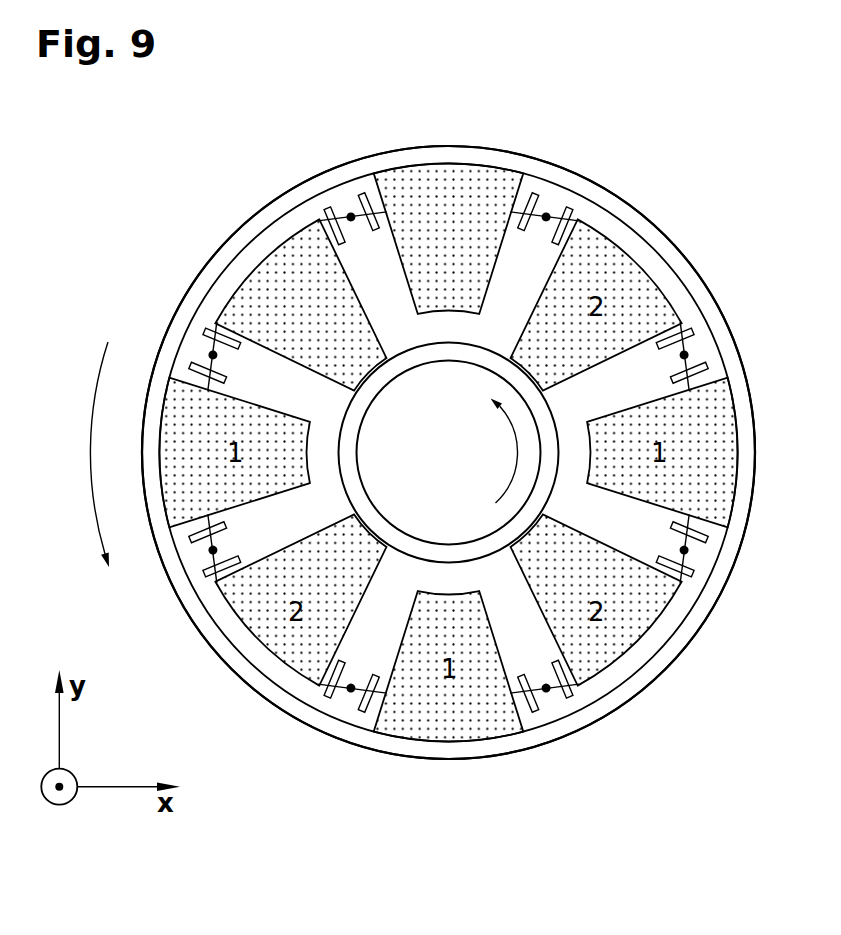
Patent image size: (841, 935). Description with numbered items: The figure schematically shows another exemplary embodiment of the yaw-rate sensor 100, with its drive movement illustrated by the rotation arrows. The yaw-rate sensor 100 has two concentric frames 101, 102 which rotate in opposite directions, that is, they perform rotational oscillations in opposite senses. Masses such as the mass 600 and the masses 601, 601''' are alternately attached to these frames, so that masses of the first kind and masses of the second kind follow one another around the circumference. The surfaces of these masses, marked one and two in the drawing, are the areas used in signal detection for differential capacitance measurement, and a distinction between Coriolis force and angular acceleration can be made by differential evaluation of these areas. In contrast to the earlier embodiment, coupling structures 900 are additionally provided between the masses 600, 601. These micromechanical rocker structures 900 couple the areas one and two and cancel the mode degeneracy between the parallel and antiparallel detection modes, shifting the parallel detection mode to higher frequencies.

The yaw-rate sensor 100 is at (698, 152).
The frame 101 is at (336, 180).
The frame 102 is at (442, 356).
The mass 600 is at (475, 192).
The mass 601 is at (273, 297).
The mass 601''' is at (638, 611).
The coupling structure 900 is at (700, 346).